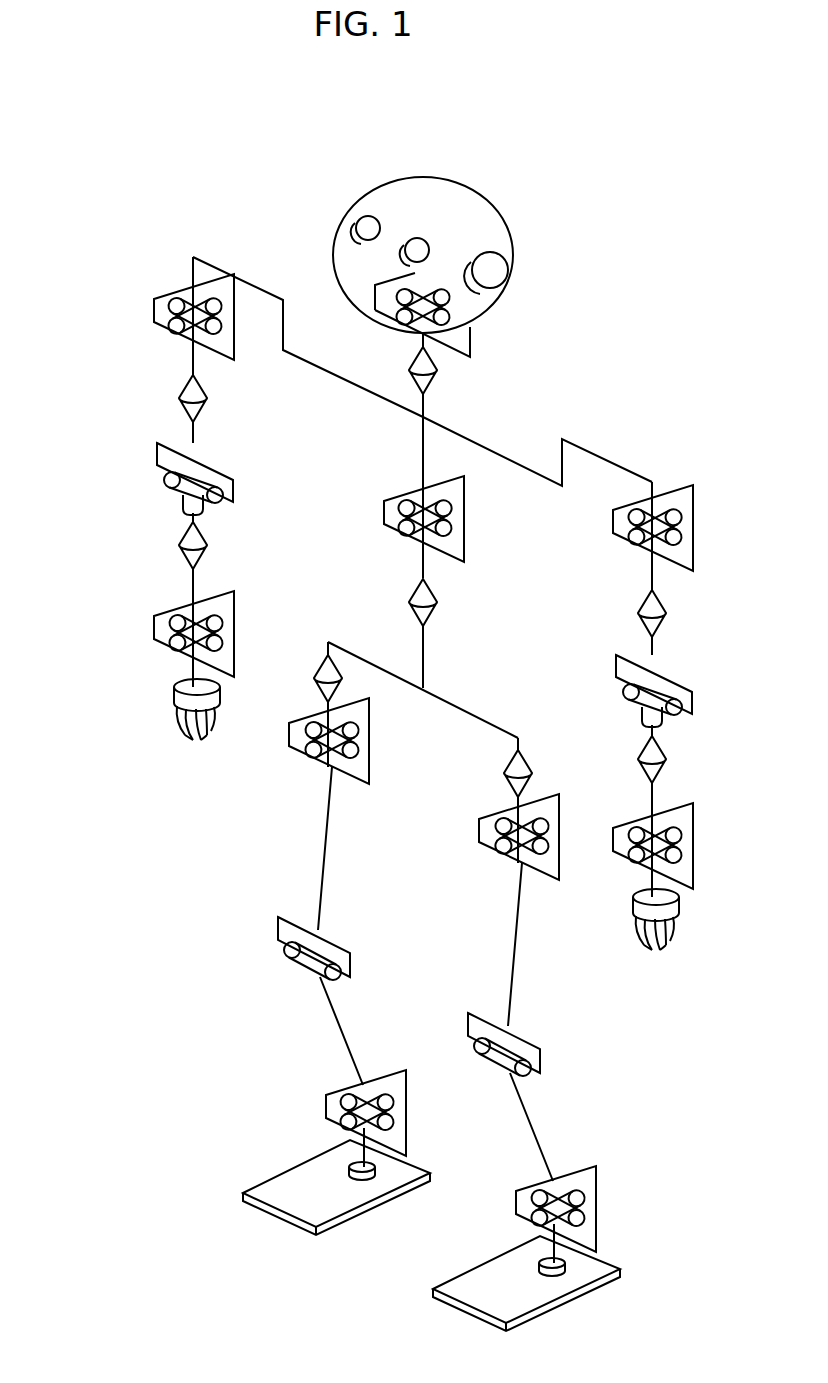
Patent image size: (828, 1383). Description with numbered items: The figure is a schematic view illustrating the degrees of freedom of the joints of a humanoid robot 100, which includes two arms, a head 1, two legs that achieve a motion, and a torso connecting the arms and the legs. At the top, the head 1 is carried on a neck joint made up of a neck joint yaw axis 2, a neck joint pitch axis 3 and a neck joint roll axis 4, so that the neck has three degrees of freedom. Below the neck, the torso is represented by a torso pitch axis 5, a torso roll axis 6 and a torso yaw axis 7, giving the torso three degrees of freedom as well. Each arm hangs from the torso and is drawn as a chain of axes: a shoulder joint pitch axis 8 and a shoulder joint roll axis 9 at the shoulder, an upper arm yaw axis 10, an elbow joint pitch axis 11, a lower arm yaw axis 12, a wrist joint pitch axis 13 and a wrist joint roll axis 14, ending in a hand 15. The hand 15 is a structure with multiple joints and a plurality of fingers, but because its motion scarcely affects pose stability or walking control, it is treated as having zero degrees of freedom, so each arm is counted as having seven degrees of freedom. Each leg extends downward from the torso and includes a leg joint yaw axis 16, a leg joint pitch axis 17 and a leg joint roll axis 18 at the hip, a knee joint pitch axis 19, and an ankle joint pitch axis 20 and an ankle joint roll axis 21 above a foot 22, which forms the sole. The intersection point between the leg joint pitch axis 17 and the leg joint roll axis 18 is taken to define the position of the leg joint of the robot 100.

The humanoid robot 100 is at (170, 170).
The head 1 is at (485, 211).
The neck joint yaw axis 2 is at (432, 386).
The neck joint pitch axis 3 is at (447, 317).
The neck joint roll axis 4 is at (458, 315).
The torso pitch axis 5 is at (452, 529).
The torso roll axis 6 is at (446, 519).
The torso yaw axis 7 is at (432, 612).
The shoulder joint pitch axis 8 is at (167, 320).
The shoulder joint roll axis 9 is at (177, 327).
The upper arm yaw axis 10 is at (187, 395).
The elbow joint pitch axis 11 is at (177, 483).
The lower arm yaw axis 12 is at (183, 543).
The wrist joint pitch axis 13 is at (161, 637).
The wrist joint roll axis 14 is at (175, 648).
The hand 15 is at (175, 715).
The leg joint yaw axis 16 is at (527, 766).
The leg joint pitch axis 17 is at (485, 846).
The leg joint roll axis 18 is at (508, 853).
The knee joint pitch axis 19 is at (535, 1056).
The ankle joint pitch axis 20 is at (585, 1213).
The ankle joint roll axis 21 is at (591, 1209).
The foot 22 is at (530, 1293).